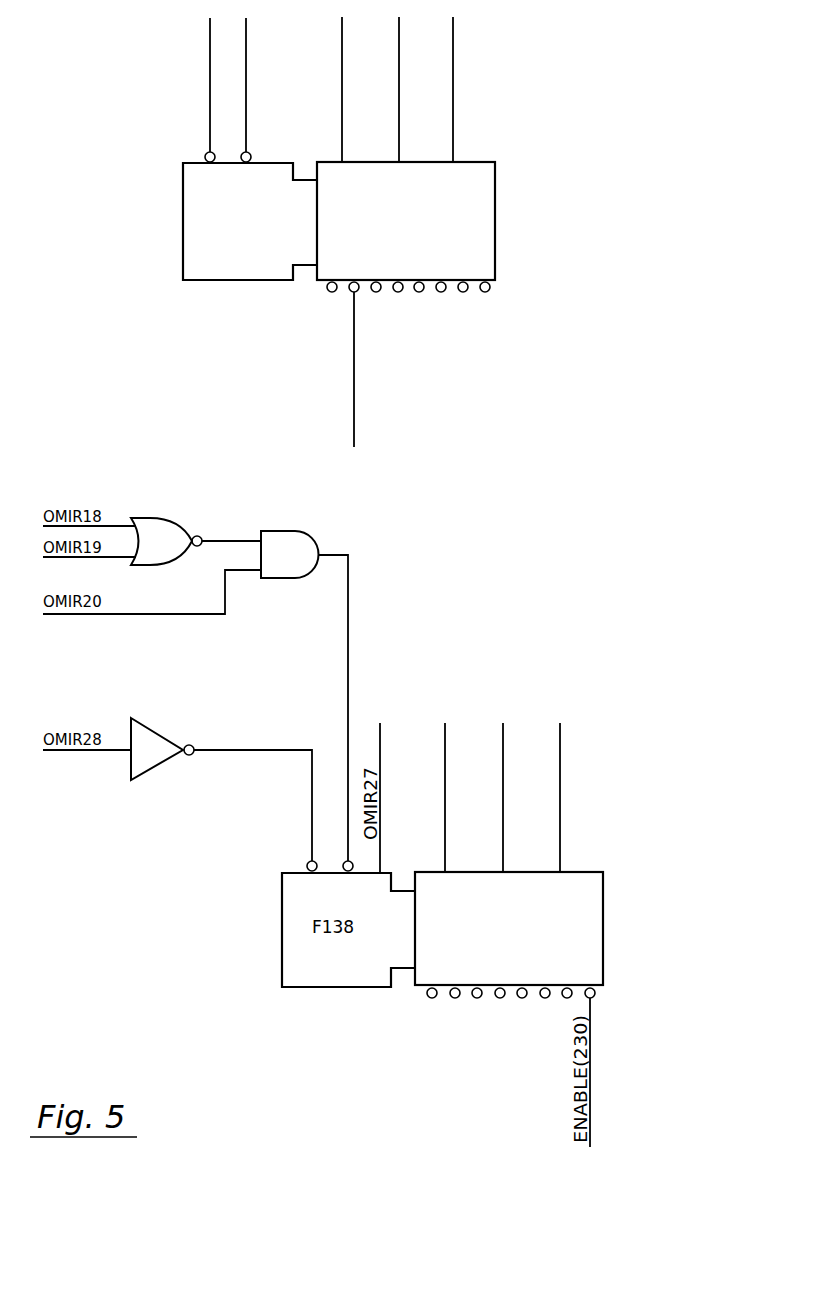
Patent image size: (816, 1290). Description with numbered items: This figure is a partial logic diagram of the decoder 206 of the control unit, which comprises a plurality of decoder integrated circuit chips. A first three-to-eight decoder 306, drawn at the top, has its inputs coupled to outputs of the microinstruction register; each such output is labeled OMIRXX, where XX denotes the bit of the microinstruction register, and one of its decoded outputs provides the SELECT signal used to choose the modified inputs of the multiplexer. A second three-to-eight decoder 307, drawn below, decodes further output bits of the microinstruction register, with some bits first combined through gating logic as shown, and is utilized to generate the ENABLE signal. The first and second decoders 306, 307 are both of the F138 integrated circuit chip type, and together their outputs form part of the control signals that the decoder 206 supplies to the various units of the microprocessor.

The decoder 206 is at (614, 100).
The first 3-to-8 decoder 306 is at (495, 209).
The second 3-to-8 decoder 307 is at (603, 913).